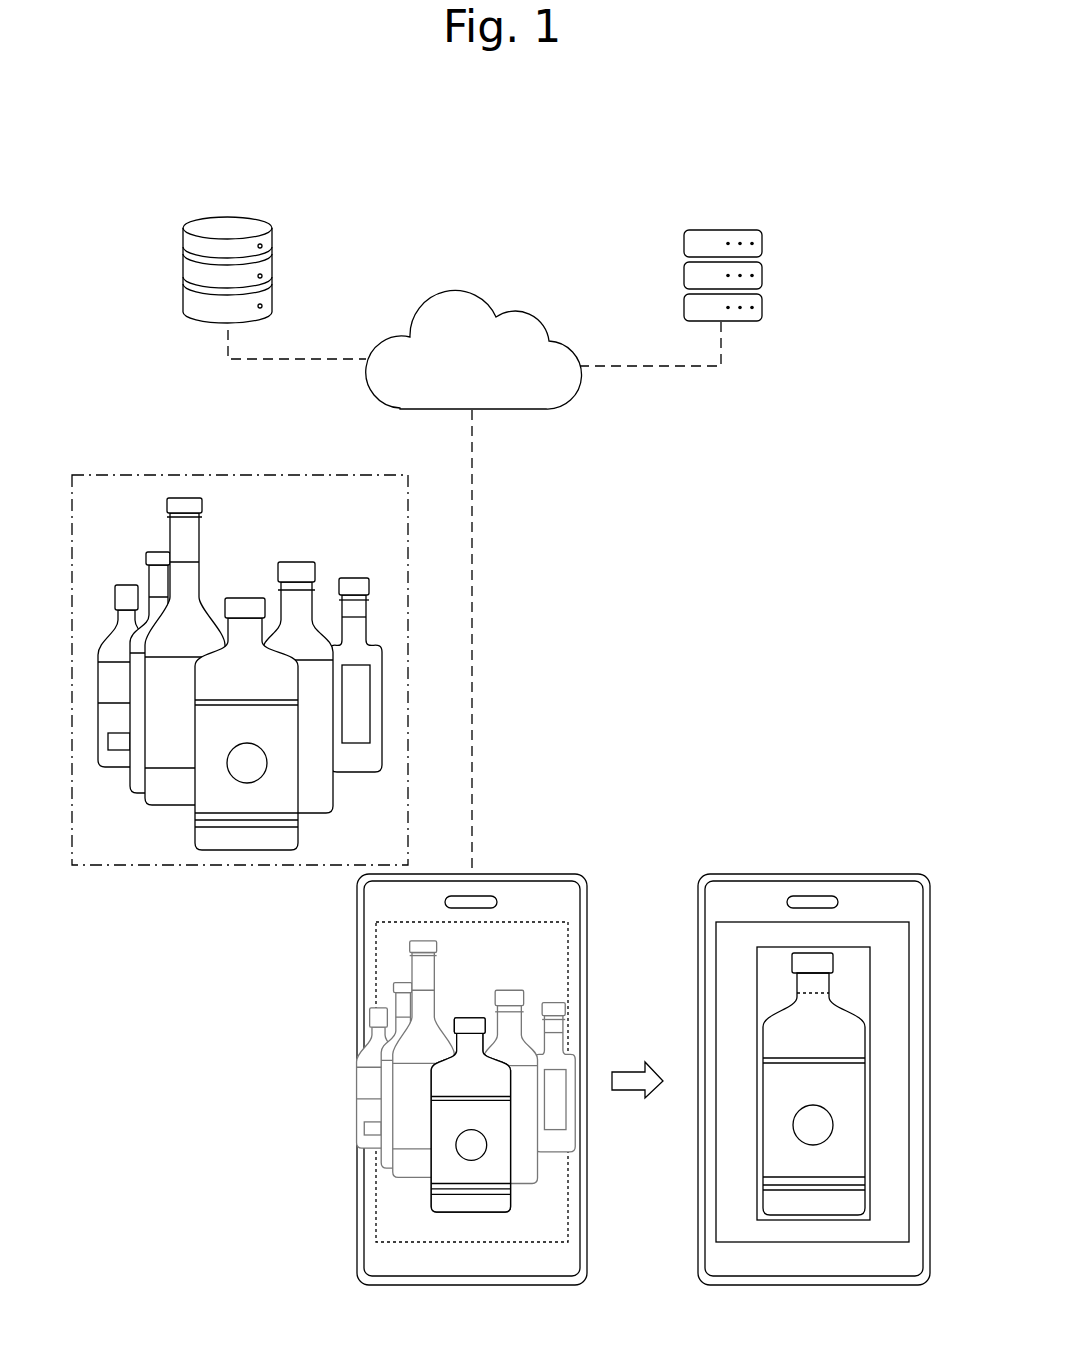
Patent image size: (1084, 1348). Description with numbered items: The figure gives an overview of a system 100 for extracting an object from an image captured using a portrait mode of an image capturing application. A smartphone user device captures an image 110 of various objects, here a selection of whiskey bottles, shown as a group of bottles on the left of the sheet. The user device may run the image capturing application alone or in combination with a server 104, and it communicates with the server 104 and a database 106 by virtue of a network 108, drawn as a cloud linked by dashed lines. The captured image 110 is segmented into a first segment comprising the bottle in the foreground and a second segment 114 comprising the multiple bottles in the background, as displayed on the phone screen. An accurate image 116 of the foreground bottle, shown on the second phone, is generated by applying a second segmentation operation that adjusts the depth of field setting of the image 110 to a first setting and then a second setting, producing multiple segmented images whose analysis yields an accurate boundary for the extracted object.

The system 100 is at (614, 126).
The server 104 is at (721, 230).
The database 106 is at (228, 215).
The network 108 is at (530, 318).
The image 110 is at (131, 512).
The second segment 114 is at (502, 1053).
The accurate image 116 is at (766, 1030).